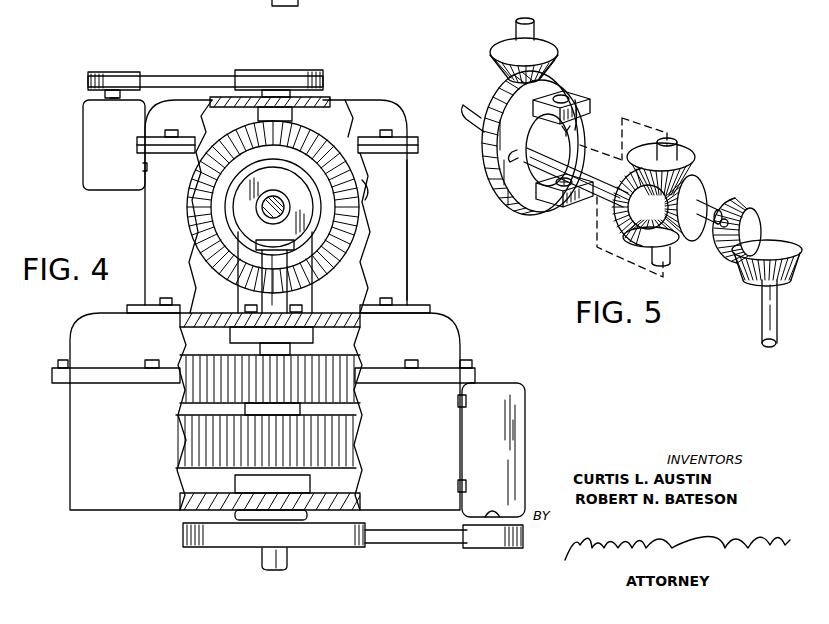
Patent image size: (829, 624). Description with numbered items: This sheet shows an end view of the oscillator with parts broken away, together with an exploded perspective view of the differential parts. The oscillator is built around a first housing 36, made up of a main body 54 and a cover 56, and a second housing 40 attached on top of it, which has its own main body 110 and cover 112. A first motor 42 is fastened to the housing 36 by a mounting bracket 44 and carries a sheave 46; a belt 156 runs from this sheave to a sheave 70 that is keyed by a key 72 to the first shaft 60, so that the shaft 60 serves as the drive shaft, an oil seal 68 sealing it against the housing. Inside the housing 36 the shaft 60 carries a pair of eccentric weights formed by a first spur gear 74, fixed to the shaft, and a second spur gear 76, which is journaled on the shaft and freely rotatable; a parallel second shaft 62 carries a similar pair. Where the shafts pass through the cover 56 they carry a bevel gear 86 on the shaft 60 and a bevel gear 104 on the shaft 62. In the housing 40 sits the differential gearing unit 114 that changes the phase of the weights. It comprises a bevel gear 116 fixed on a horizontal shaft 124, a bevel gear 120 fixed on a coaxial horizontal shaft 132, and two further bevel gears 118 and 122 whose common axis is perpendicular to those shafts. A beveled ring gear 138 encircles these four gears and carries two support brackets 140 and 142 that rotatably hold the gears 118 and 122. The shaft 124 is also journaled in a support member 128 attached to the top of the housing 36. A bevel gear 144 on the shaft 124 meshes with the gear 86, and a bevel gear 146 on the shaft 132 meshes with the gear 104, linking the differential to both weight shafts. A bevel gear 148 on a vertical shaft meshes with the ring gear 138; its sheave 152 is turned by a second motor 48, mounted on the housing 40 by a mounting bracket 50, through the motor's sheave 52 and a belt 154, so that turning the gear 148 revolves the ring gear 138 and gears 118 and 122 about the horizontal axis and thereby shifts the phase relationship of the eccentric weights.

In FIG. 4, the first housing 36 is at (477, 332).
In FIG. 4, the second housing 40 is at (131, 244).
In FIG. 4, the first motor 42 is at (522, 426).
In FIG. 4, the mounting bracket 44 is at (468, 408).
In FIG. 4, the sheave 46 is at (500, 548).
In FIG. 4, the second motor 48 is at (102, 162).
In FIG. 4, the mounting bracket 50 is at (143, 192).
In FIG. 4, the sheave 52 is at (104, 74).
In FIG. 4, the main body 54 is at (68, 390).
In FIG. 4, the cover 56 is at (70, 338).
In FIG. 4, the first shaft 60 is at (276, 297).
In FIG. 5, the second shaft 62 is at (762, 325).
In FIG. 4, the oil seal 68 is at (199, 7).
In FIG. 4, the sheave 70 is at (184, 530).
In FIG. 4, the key 72 is at (302, 7).
In FIG. 4, the first spur gear 74 is at (354, 348).
In FIG. 4, the second spur gear 76 is at (332, 466).
In FIG. 4, the bevel gear 86 is at (304, 250).
In FIG. 5, the bevel gear 104 is at (752, 270).
In FIG. 4, the main body 110 is at (390, 205).
In FIG. 4, the cover 112 is at (405, 115).
In FIG. 5, the differential gearing unit 114 is at (495, 81).
In FIG. 5, the bevel gear 116 is at (630, 206).
In FIG. 5, the bevel gear 118 is at (688, 165).
In FIG. 5, the bevel gear 120 is at (694, 197).
In FIG. 5, the bevel gear 122 is at (683, 246).
In FIG. 4, the horizontal shaft 124 is at (292, 208).
In FIG. 5, the horizontal shaft 124 is at (591, 165).
In FIG. 4, the support member 128 is at (305, 298).
In FIG. 5, the horizontal shaft 132 is at (719, 211).
In FIG. 4, the beveled ring gear 138 is at (358, 174).
In FIG. 5, the beveled ring gear 138 is at (574, 100).
In FIG. 5, the support bracket 140 is at (585, 101).
In FIG. 5, the support bracket 142 is at (540, 206).
In FIG. 4, the bevel gear 144 is at (252, 184).
In FIG. 5, the bevel gear 146 is at (760, 208).
In FIG. 4, the bevel gear 148 is at (323, 100).
In FIG. 5, the bevel gear 148 is at (552, 57).
In FIG. 4, the sheave 152 is at (291, 73).
In FIG. 4, the belt 154 is at (203, 82).
In FIG. 4, the belt 156 is at (399, 535).